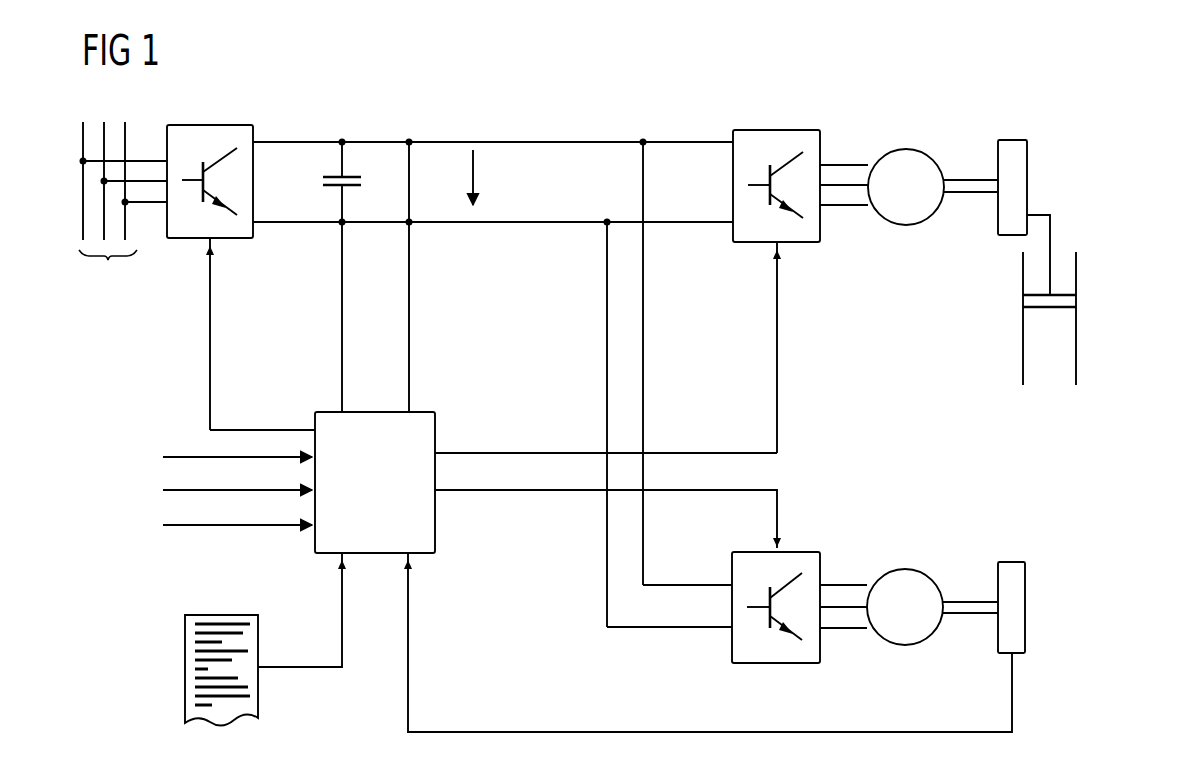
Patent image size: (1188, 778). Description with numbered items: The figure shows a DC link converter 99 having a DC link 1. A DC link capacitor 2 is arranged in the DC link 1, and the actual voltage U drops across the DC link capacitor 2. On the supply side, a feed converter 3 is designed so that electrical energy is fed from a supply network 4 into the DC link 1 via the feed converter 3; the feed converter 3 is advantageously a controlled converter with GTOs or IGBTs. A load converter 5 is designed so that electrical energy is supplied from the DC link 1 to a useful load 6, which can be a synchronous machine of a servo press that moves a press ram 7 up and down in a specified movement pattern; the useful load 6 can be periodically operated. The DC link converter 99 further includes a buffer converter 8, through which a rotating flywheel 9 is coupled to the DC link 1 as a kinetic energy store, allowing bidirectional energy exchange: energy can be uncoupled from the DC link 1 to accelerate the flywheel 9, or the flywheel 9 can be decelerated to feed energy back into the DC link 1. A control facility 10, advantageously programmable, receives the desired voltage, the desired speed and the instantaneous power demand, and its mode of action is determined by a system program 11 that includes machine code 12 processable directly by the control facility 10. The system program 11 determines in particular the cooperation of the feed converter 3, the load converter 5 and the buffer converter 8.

The DC link 1 is at (566, 193).
The DC link capacitor 2 is at (323, 182).
The feed converter 3 is at (207, 125).
The supply network 4 is at (123, 210).
The load converter 5 is at (777, 129).
The useful load 6 is at (906, 149).
The press ram 7 is at (1066, 287).
The buffer converter 8 is at (731, 571).
The flywheel 9 is at (958, 565).
The control facility 10 is at (437, 437).
The system program 11 is at (220, 612).
The machine code 12 is at (187, 666).
The DC link converter 99 is at (1085, 543).